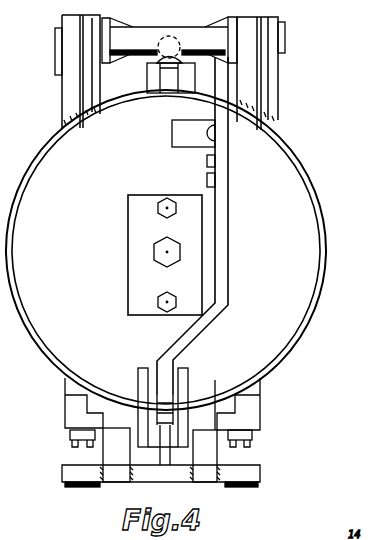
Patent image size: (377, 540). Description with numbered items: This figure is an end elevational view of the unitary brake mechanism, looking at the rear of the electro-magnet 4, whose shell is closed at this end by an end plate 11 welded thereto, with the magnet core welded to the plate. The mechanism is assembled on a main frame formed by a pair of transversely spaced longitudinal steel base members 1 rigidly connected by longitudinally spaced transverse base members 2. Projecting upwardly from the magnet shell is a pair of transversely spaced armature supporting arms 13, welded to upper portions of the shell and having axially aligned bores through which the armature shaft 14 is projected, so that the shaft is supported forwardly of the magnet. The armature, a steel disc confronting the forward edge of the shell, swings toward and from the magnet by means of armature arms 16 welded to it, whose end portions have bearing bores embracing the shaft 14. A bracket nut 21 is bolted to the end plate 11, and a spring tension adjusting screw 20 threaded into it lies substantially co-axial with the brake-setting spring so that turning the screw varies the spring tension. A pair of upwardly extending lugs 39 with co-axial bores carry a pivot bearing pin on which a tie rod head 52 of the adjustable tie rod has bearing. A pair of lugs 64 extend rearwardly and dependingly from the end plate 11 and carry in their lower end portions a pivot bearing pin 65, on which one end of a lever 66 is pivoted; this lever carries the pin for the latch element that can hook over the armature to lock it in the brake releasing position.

The longitudinal steel base member 1 is at (160, 455).
The transverse base member 2 is at (258, 474).
The electro-magnet 4 is at (318, 233).
The end plate 11 is at (271, 315).
The armature supporting arm 13 is at (91, 110).
The armature shaft 14 is at (197, 38).
The armature arm 16 is at (62, 99).
The spring tension adjusting screw 20 is at (166, 256).
The bracket nut 21 is at (140, 311).
The upwardly extending lug 39 is at (177, 88).
The tie rod head 52 is at (180, 72).
The lug 64 is at (138, 384).
The pivot bearing pin 65 is at (140, 421).
The lever 66 is at (228, 288).